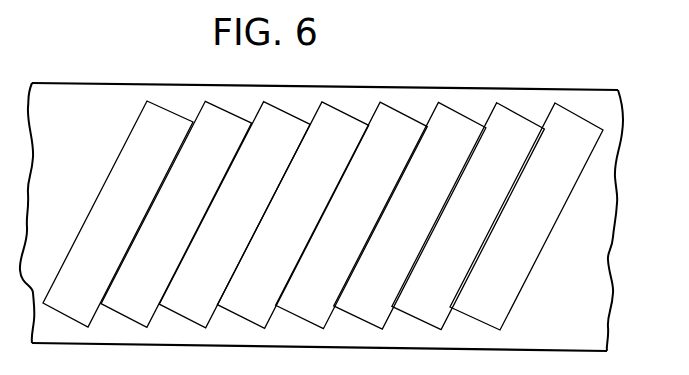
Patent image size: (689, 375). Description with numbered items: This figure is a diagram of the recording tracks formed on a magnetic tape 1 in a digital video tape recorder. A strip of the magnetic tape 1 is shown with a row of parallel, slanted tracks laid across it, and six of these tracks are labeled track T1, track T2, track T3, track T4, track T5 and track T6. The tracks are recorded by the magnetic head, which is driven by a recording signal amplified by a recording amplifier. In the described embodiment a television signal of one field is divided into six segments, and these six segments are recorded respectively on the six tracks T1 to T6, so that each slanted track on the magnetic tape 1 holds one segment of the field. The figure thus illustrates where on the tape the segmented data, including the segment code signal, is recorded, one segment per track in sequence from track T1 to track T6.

The magnetic tape 1 is at (582, 297).
The track T1 is at (176, 214).
The track T2 is at (234, 215).
The track T3 is at (292, 215).
The track T4 is at (352, 215).
The track T5 is at (410, 215).
The track T6 is at (468, 216).